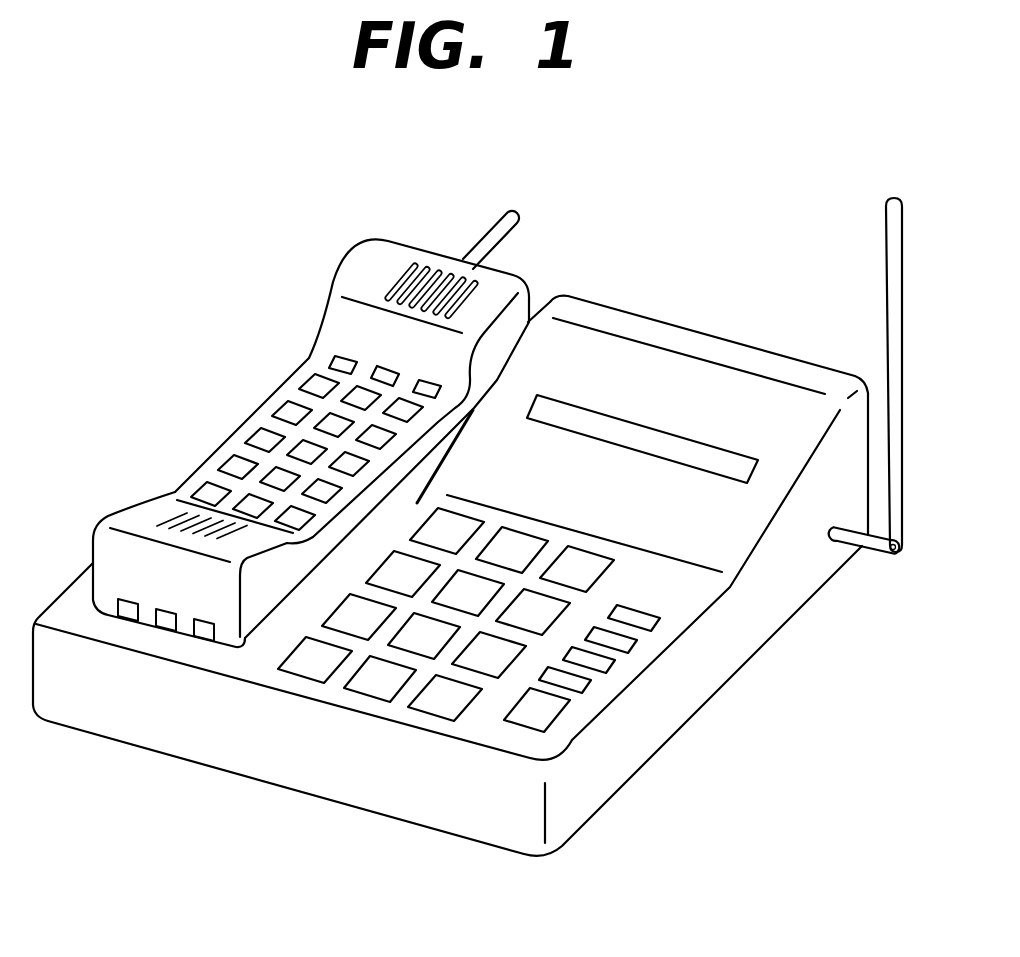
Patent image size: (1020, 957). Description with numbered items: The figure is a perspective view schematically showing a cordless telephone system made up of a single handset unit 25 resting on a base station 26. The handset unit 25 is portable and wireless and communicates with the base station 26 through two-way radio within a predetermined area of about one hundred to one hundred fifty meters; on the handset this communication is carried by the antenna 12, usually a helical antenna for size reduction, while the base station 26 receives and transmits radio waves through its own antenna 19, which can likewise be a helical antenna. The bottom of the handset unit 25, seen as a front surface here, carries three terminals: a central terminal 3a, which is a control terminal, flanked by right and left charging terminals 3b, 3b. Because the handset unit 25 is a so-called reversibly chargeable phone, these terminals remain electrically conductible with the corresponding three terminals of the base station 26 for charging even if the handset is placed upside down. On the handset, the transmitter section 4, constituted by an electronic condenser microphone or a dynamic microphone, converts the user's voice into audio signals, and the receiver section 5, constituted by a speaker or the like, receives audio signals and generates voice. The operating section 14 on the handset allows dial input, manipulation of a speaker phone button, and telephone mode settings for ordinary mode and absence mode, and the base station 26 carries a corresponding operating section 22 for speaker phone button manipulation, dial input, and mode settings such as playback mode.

The control terminal 3a is at (166, 630).
The charging terminals 3b is at (127, 620).
The transmitter section 4 is at (153, 512).
The receiver section 5 is at (389, 270).
The antenna 12 is at (493, 231).
The operating section 14 is at (261, 431).
The antenna 19 is at (887, 290).
The operating section 22 is at (592, 521).
The handset unit 25 is at (280, 357).
The base station 26 is at (749, 679).